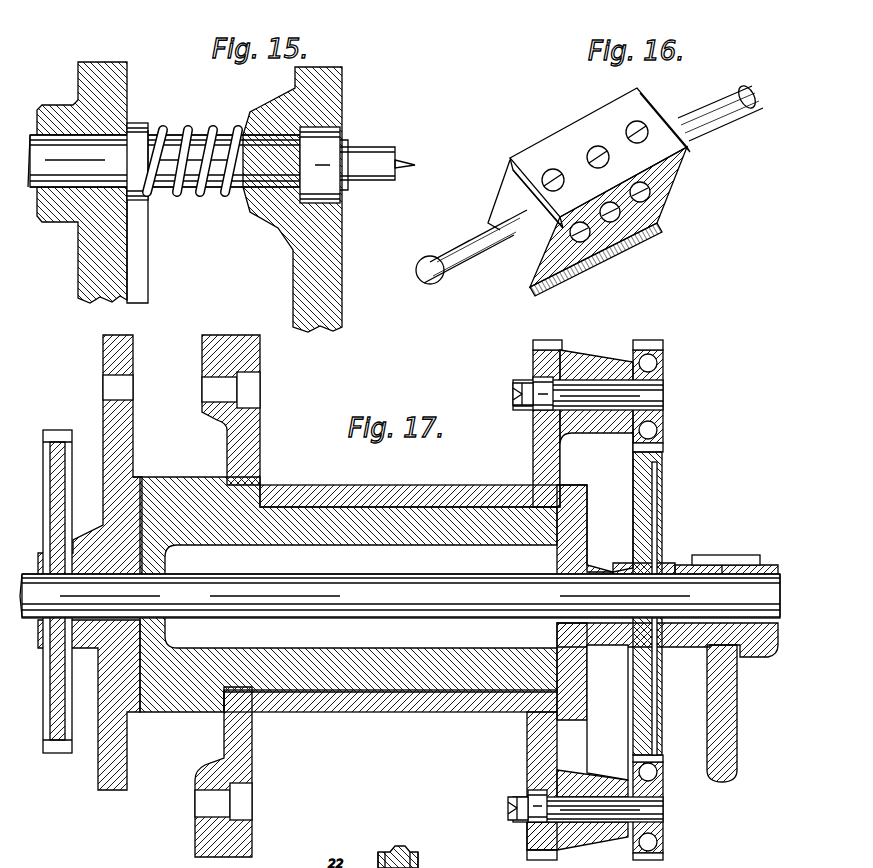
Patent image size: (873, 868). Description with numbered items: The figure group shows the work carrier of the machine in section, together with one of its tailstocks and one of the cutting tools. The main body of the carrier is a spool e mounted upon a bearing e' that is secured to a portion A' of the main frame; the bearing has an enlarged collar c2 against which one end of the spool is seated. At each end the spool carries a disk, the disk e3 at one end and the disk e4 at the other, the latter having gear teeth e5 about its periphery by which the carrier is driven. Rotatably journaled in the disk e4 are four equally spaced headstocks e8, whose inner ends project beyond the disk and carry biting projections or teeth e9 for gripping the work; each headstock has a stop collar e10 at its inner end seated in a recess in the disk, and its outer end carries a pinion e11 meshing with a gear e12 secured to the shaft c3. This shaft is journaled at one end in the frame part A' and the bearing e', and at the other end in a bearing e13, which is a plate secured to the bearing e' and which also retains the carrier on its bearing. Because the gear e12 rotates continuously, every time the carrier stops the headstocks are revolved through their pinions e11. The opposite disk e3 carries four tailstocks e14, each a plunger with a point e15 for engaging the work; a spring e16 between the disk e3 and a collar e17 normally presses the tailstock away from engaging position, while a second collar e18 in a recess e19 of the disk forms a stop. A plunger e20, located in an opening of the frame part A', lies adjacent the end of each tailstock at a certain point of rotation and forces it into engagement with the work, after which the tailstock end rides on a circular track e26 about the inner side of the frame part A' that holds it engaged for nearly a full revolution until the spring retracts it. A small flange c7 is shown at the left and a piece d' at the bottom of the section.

In FIG. 15, the frame part A' is at (77, 182).
In FIG. 17, the frame part A' is at (102, 562).
In FIG. 15, the circular track e26 is at (140, 263).
In FIG. 15, the tailstock e14 is at (257, 160).
In FIG. 15, the plunger e20 is at (128, 123).
In FIG. 15, the collar e17 is at (141, 128).
In FIG. 15, the spring e16 is at (192, 127).
In FIG. 15, the disk e3 is at (327, 232).
In FIG. 17, the disk e3 is at (250, 448).
In FIG. 15, the second collar e18 is at (330, 152).
In FIG. 15, the point e15 is at (402, 165).
In FIG. 17, the flange c7 is at (43, 740).
In FIG. 17, the body c2 is at (180, 487).
In FIG. 17, the recess e19 is at (263, 793).
In FIG. 17, the spool e is at (410, 480).
In FIG. 17, the bearing e' is at (390, 666).
In FIG. 17, the disk e4 is at (495, 745).
In FIG. 17, the gear teeth e5 is at (555, 345).
In FIG. 17, the bearing e13 is at (578, 530).
In FIG. 17, the pinions e11 is at (663, 362).
In FIG. 17, the gear e12 is at (653, 500).
In FIG. 17, the headstocks e8 is at (582, 392).
In FIG. 17, the stop collar e10 is at (537, 800).
In FIG. 17, the biting projections or teeth e9 is at (494, 810).
In FIG. 17, the shaft c3 is at (433, 590).
In FIG. 17, the piece d' is at (416, 849).